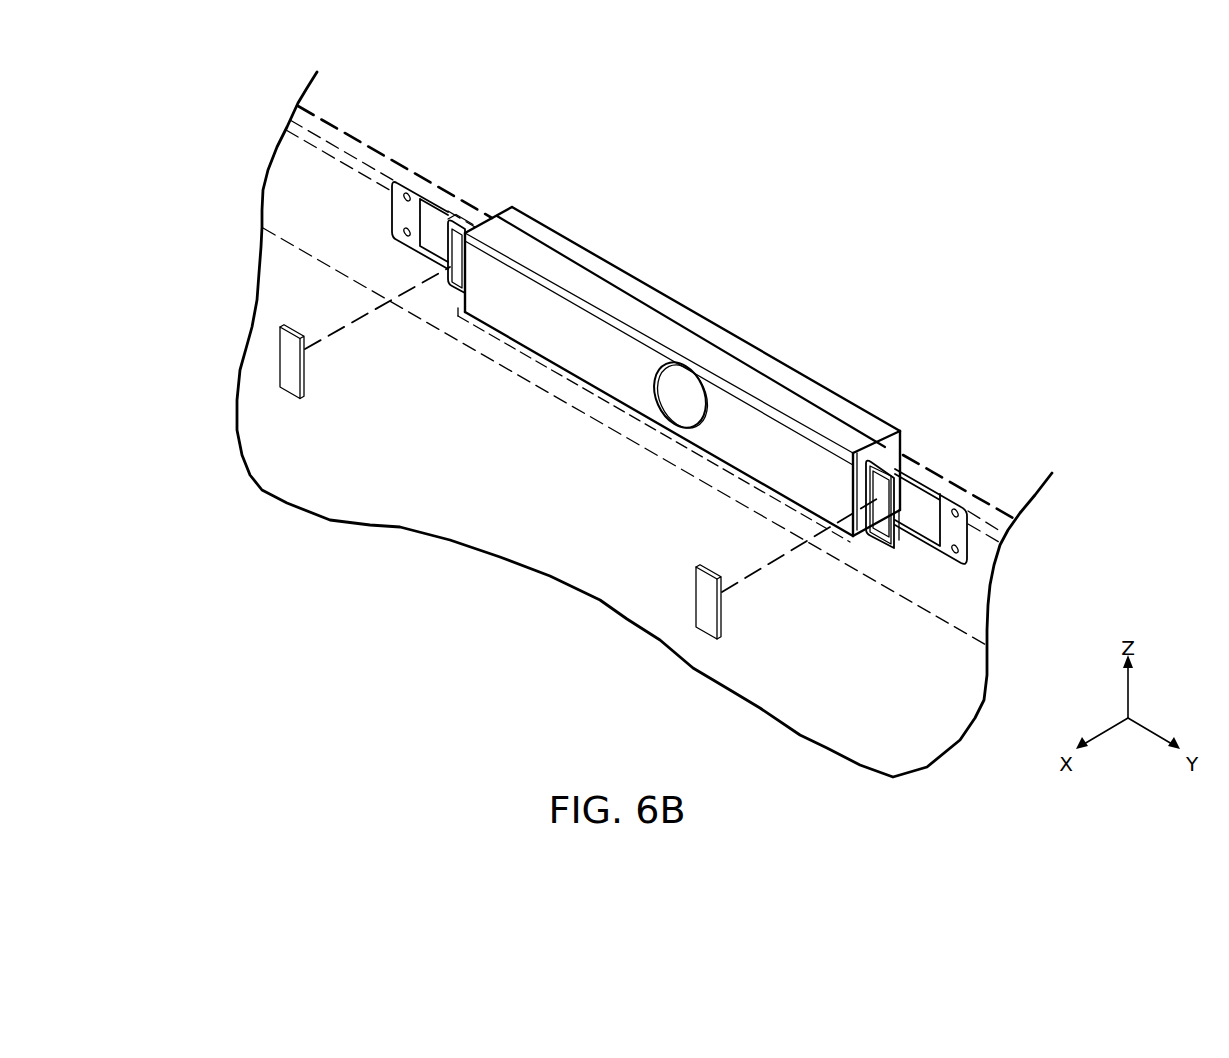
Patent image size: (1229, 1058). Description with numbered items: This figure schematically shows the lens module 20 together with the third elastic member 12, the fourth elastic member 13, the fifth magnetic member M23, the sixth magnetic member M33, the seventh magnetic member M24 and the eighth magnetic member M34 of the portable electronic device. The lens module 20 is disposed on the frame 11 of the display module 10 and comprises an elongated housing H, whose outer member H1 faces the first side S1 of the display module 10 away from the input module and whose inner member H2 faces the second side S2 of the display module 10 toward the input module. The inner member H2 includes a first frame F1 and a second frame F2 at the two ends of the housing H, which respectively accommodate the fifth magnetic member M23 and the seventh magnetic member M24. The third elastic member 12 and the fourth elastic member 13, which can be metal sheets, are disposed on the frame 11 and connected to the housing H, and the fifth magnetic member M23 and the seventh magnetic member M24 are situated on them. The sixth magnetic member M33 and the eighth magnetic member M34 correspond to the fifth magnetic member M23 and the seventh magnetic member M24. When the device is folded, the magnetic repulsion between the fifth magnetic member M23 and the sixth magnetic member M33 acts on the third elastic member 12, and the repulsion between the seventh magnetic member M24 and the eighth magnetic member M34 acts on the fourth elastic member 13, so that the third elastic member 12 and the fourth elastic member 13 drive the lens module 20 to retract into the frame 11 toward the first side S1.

The display module 10 is at (356, 131).
The frame 11 is at (285, 186).
The third elastic member 12 is at (397, 180).
The fourth elastic member 13 is at (945, 504).
The lens module 20 is at (679, 374).
The housing H is at (691, 329).
The outer member H1 is at (685, 320).
The inner member H2 is at (733, 372).
The first frame F1 is at (473, 203).
The second frame F2 is at (894, 455).
The fifth magnetic member M23 is at (452, 216).
The seventh magnetic member M24 is at (871, 460).
The sixth magnetic member M33 is at (303, 377).
The eighth magnetic member M34 is at (720, 615).
The first side S1 is at (522, 185).
The second side S2 is at (288, 256).